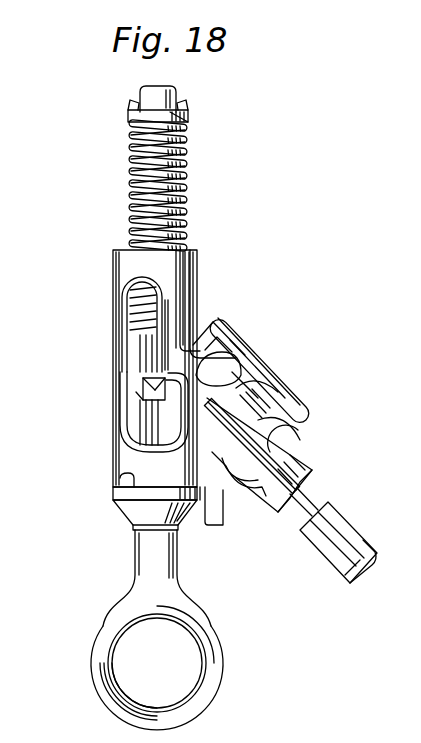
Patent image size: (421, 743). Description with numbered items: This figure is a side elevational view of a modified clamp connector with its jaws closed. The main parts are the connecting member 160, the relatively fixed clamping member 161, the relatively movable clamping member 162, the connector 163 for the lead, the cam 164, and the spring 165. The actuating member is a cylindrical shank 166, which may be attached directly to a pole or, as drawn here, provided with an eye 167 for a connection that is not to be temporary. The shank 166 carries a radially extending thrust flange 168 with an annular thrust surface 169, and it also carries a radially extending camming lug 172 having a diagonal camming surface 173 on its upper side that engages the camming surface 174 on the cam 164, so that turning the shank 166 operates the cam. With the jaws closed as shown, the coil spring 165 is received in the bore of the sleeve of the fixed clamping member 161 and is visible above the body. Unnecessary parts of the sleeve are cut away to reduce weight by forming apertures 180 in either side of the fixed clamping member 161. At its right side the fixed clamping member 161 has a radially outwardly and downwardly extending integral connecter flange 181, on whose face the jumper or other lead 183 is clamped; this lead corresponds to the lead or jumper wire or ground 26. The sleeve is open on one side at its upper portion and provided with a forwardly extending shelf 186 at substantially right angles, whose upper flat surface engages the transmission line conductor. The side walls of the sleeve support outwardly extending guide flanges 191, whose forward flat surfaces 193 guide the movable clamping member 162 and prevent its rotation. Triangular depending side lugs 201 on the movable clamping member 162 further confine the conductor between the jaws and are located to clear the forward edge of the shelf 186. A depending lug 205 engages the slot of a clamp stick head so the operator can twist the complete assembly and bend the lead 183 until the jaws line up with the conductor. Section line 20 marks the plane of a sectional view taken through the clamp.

The section line 20 is at (102, 297).
The lead or jumper wire or ground 26 is at (340, 525).
The connecting member 160 is at (172, 627).
The relatively fixed clamping member 161 is at (112, 468).
The relatively movable clamping member 162 is at (244, 345).
The connector for the lead 163 is at (274, 447).
The cam 164 is at (150, 362).
The spring 165 is at (190, 197).
The cylindrical shank 166 is at (172, 566).
The eye 167 is at (215, 640).
The thrust flange 168 is at (122, 492).
The annular thrust surface 169 is at (126, 478).
The camming lug 172 is at (138, 410).
The diagonal camming surface 173 is at (150, 381).
The camming surface 174 is at (145, 398).
The apertures 180 is at (128, 343).
The connecter flange 181 is at (264, 414).
The jumper or other lead 183 is at (300, 502).
The shelf 186 is at (213, 366).
The guide flange 191 is at (184, 270).
The forward flat surfaces 193 is at (200, 290).
The triangular depending side lugs 201 is at (247, 378).
The depending lug 205 is at (213, 527).